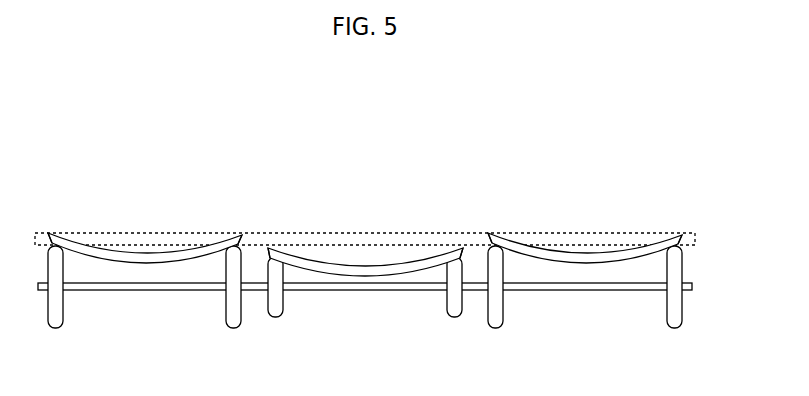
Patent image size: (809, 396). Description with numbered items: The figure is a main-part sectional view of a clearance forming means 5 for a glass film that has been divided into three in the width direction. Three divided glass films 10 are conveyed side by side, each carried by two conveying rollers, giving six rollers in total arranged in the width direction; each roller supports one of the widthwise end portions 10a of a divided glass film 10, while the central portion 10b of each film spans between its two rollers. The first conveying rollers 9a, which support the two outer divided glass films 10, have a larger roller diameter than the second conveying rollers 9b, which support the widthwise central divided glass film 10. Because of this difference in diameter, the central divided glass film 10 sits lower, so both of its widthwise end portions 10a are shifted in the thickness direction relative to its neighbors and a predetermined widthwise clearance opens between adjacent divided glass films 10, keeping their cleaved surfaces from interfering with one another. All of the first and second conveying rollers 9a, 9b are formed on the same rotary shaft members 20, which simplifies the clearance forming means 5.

The clearance forming means 5 is at (717, 145).
The first conveying rollers 9a is at (55, 313).
The second conveying rollers 9b is at (275, 307).
The divided glass films 10 is at (132, 252).
The widthwise end portions 10a is at (52, 235).
The central portion of curved plate 10b is at (145, 263).
The rotary shaft members 20 is at (322, 293).